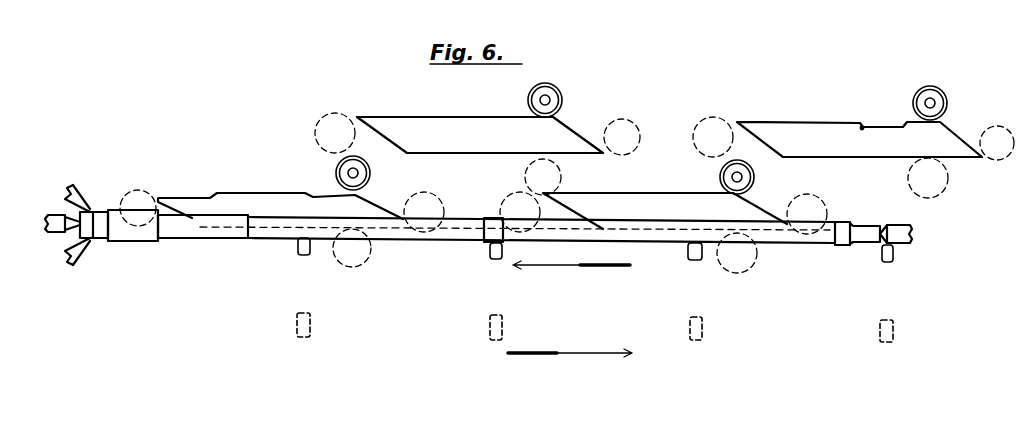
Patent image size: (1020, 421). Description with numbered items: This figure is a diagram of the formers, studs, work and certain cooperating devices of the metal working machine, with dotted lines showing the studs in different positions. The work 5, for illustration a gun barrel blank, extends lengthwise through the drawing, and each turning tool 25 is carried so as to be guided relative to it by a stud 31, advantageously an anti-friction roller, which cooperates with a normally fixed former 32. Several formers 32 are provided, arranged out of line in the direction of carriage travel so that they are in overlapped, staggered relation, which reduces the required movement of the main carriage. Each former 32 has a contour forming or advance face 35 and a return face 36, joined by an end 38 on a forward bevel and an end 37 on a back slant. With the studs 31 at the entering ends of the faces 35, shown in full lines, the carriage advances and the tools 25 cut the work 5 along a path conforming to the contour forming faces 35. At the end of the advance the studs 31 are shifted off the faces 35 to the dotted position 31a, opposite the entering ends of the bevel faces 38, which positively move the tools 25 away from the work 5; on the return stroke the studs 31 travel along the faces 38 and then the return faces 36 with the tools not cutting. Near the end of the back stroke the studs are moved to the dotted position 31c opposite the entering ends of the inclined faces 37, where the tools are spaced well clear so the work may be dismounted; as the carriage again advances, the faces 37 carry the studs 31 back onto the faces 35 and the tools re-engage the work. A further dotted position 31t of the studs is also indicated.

The work 5 is at (428, 243).
The turning tool 25 is at (305, 257).
The stud 31 is at (369, 170).
The stud position at entering ends of bevel faces 31a is at (141, 191).
The stud position at entering ends of inclined faces 31c is at (445, 208).
The roller position (transfer) 31t is at (362, 266).
The former 32 is at (383, 206).
The contour forming face 35 is at (247, 193).
The return face 36 is at (272, 238).
The back-slant end face 37 is at (955, 133).
The forward bevel end face 38 is at (749, 135).